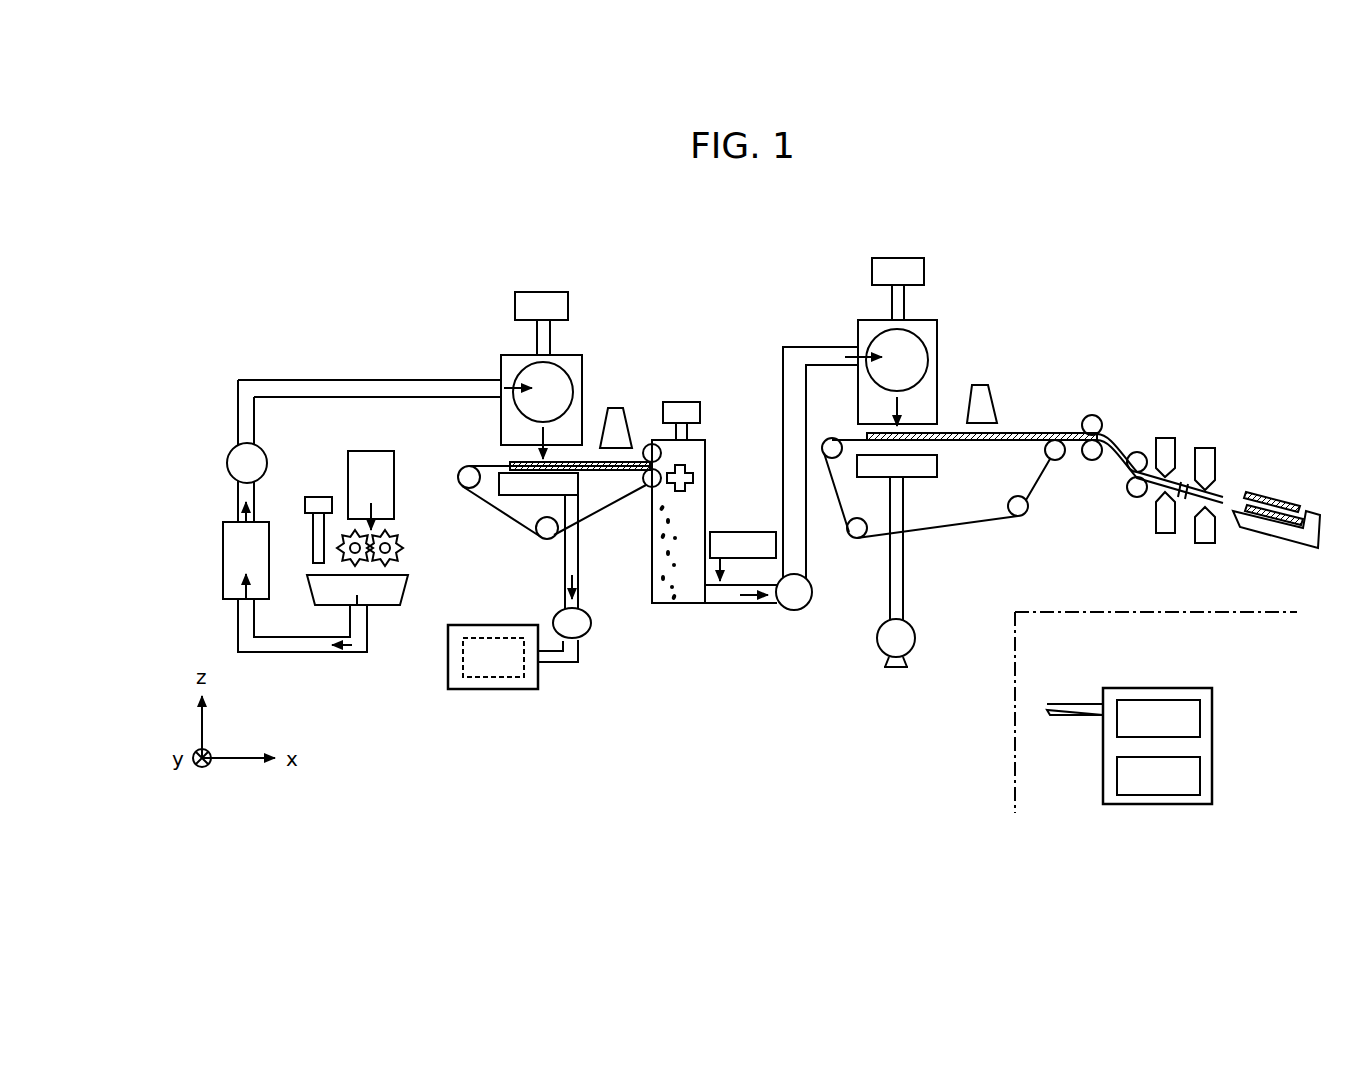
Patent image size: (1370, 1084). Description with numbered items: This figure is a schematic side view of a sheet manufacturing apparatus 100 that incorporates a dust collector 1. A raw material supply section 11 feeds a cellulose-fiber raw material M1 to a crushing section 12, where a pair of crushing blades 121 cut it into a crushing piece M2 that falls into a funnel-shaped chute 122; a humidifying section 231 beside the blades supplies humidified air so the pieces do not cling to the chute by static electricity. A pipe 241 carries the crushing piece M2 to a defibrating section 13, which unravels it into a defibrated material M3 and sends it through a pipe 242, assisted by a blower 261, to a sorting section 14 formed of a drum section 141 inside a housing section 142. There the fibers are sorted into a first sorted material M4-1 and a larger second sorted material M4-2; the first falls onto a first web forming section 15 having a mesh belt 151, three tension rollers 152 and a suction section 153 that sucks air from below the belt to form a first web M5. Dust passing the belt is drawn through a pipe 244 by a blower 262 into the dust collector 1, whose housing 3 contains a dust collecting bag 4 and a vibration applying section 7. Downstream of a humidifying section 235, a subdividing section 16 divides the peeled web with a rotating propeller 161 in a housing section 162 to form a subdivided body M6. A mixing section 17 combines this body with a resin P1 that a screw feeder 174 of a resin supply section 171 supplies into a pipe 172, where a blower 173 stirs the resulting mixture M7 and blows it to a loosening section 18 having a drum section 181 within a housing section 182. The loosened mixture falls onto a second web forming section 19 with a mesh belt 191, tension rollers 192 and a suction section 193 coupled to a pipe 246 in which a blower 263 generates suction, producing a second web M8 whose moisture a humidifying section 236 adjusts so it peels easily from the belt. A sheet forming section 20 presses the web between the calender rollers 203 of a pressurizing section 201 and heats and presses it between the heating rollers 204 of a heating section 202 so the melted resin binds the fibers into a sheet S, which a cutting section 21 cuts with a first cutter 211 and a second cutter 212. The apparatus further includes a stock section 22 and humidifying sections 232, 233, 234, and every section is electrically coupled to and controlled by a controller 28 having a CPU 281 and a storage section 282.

The sheet manufacturing apparatus 100 is at (1122, 241).
The dust collector 1 is at (556, 716).
The housing 3 is at (486, 695).
The dust collecting bag 4 is at (479, 701).
The vibration applying section 7 is at (491, 694).
The raw material supply section 11 is at (363, 451).
The crushing section 12 is at (393, 569).
The crushing blades 121 is at (350, 560).
The chute 122 is at (394, 591).
The defibrating section 13 is at (223, 568).
The sorting section 14 is at (553, 353).
The drum section 141 is at (572, 374).
The housing section 142 is at (572, 355).
The first web forming section 15 is at (545, 523).
The mesh belt 151 is at (603, 522).
The tension rollers 152 is at (465, 472).
The suction section 153 is at (582, 486).
The subdividing section 16 is at (688, 507).
The propeller 161 is at (694, 478).
The housing section 162 is at (656, 604).
The mixing section 17 is at (800, 498).
The resin supply section 171 is at (751, 532).
The pipe 172 is at (812, 583).
The blower 173 is at (797, 609).
The screw feeder 174 is at (737, 548).
The loosening section 18 is at (937, 319).
The drum section 181 is at (926, 346).
The housing section 182 is at (929, 320).
The second web forming section 19 is at (951, 499).
The mesh belt 191 is at (945, 528).
The tension rollers 192 is at (831, 438).
The suction section 193 is at (937, 467).
The sheet forming section 20 is at (1169, 462).
The pressurizing section 201 is at (1091, 406).
The heating section 202 is at (1105, 512).
The calender rollers 203 is at (1140, 388).
The heating rollers 204 is at (1130, 473).
The cutting section 21 is at (1216, 448).
The first cutter 211 is at (1177, 428).
The second cutter 212 is at (1222, 438).
The stock section 22 is at (1290, 540).
The humidifying section 231 is at (319, 497).
The humidifying section 232 is at (541, 292).
The humidifying section 233 is at (682, 402).
The humidifying section 234 is at (899, 258).
The humidifying section 235 is at (618, 408).
The humidifying section 236 is at (987, 385).
The pipe 241 is at (325, 652).
The pipe 242 is at (262, 380).
The pipe 244 is at (580, 585).
The pipe 246 is at (905, 599).
The blower 261 is at (233, 447).
The blower 262 is at (586, 640).
The blower 263 is at (916, 637).
The controller 28 is at (1156, 712).
The central processing unit 281 is at (1200, 718).
The storage section 282 is at (1200, 776).
The raw material M1 is at (376, 512).
The crushing piece M2 is at (238, 606).
The defibrated material M3 is at (236, 524).
The first sorted material M4-1 is at (541, 440).
The second sorted material M4-2 is at (568, 576).
The first web M5 is at (636, 458).
The subdivided body M6 is at (674, 518).
The mixture M7 is at (749, 601).
The second web M8 is at (957, 432).
The resin P1 is at (726, 566).
The sheet S is at (1134, 456).